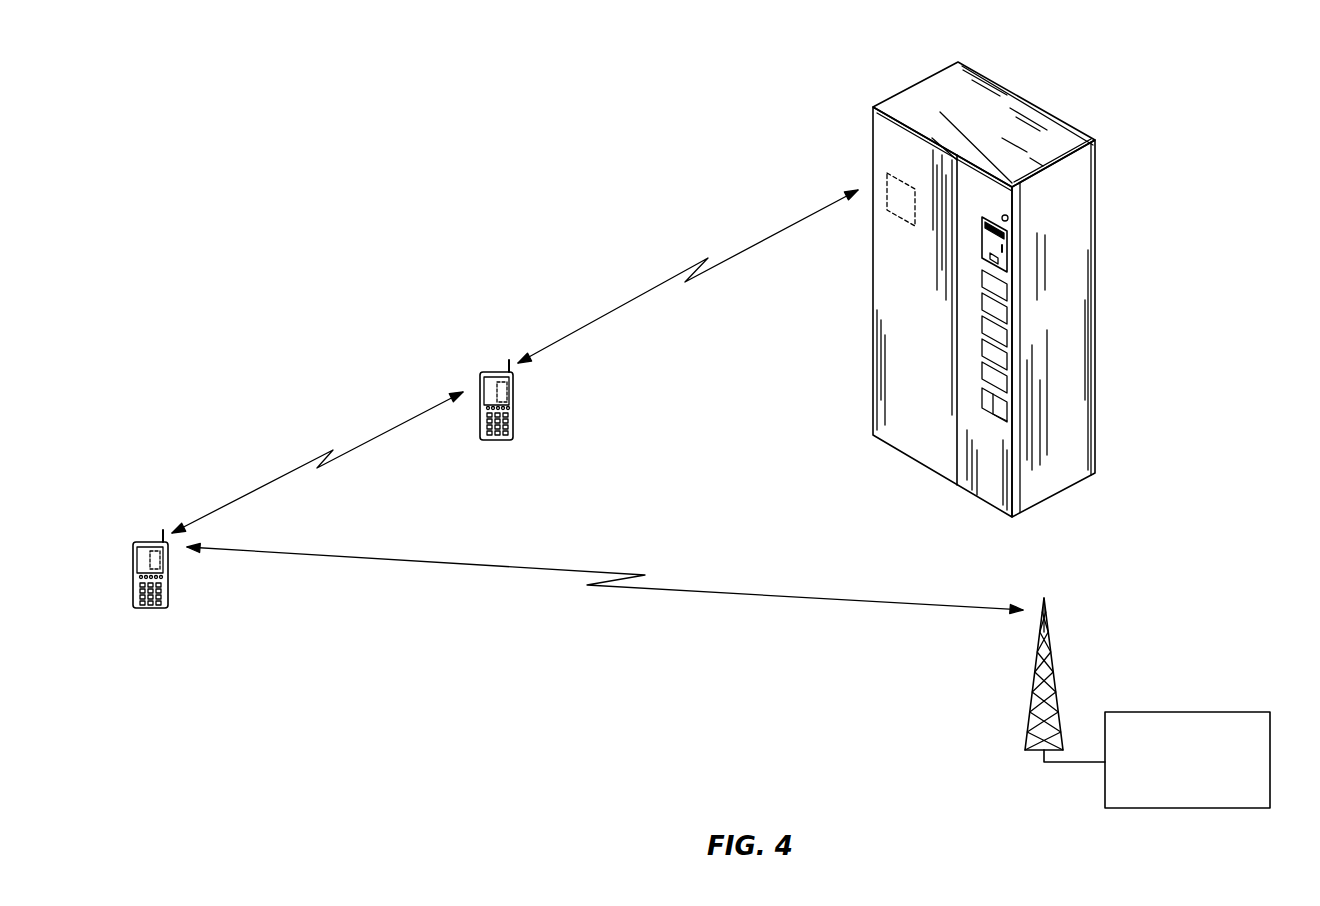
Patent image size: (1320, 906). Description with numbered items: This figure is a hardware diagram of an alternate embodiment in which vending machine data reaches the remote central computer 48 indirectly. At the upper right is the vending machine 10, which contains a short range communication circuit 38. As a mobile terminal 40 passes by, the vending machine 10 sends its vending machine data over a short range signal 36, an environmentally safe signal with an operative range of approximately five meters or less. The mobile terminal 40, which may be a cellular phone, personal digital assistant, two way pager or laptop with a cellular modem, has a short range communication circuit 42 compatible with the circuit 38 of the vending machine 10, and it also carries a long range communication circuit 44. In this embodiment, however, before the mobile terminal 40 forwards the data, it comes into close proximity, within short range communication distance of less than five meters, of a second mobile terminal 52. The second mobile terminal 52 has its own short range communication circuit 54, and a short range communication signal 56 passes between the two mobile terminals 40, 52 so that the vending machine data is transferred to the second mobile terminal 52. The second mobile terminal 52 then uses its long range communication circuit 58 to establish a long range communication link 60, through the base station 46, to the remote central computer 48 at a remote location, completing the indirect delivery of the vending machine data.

The vending machine 10 is at (1042, 90).
The short range signal 36 is at (765, 240).
The short range communication circuit 38 is at (884, 160).
The mobile terminal 40 is at (500, 398).
The short range communication circuit 42 is at (508, 388).
The long range communication circuit 44 is at (508, 433).
The base station 46 is at (1050, 648).
The remote central computer 48 is at (1215, 712).
The second mobile terminal 52 is at (152, 565).
The short range communication circuit 54 is at (162, 567).
The short range communication signal 56 is at (408, 420).
The long range communication circuit 58 is at (165, 603).
The long range communication link 60 is at (530, 567).